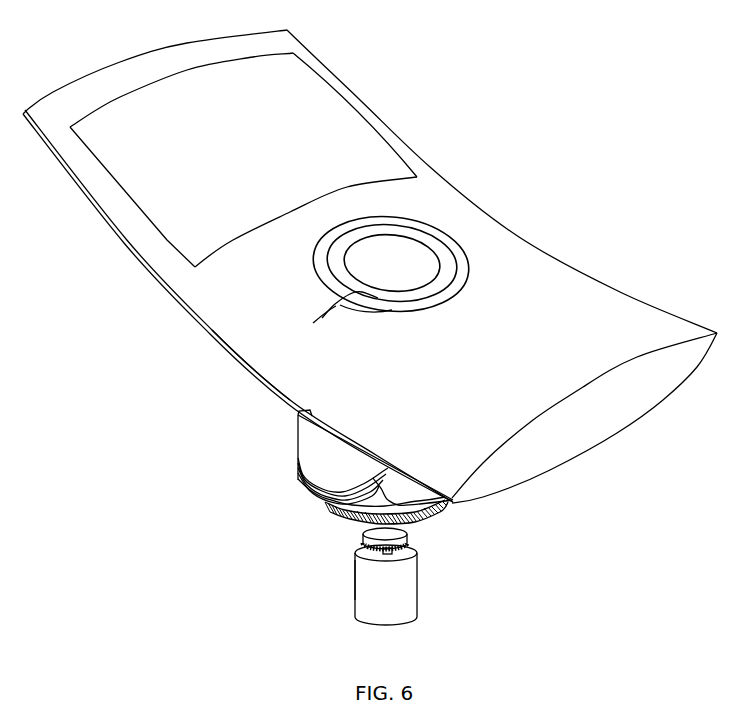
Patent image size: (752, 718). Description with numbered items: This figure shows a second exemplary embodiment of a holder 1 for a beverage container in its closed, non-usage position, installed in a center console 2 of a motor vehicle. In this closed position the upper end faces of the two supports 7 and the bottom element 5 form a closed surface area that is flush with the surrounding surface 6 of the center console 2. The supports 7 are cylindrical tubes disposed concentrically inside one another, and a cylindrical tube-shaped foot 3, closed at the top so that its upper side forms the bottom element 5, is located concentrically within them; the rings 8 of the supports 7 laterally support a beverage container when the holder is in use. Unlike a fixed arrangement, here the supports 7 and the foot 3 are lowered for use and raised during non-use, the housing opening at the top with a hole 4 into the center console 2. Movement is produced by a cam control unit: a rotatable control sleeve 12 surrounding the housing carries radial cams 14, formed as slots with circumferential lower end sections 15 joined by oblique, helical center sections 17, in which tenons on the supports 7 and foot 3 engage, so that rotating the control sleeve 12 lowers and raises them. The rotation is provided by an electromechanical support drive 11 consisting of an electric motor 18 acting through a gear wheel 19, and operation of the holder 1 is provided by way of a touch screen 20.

The holder 1 is at (508, 117).
The center console 2 is at (551, 294).
The foot 3 is at (393, 265).
The hole 4 is at (416, 207).
The bottom element 5 is at (391, 263).
The surrounding surface 6 is at (248, 324).
The supports 7 is at (375, 304).
The rings 8 is at (324, 314).
The electromechanical support drive 11 is at (332, 540).
The control sleeve 12 is at (316, 443).
The radial cams 14 is at (322, 506).
The lower end sections 15 is at (373, 496).
The center sections 17 is at (453, 502).
The electric motor 18 is at (407, 588).
The gear wheel 19 is at (410, 530).
The touch screen 20 is at (327, 115).